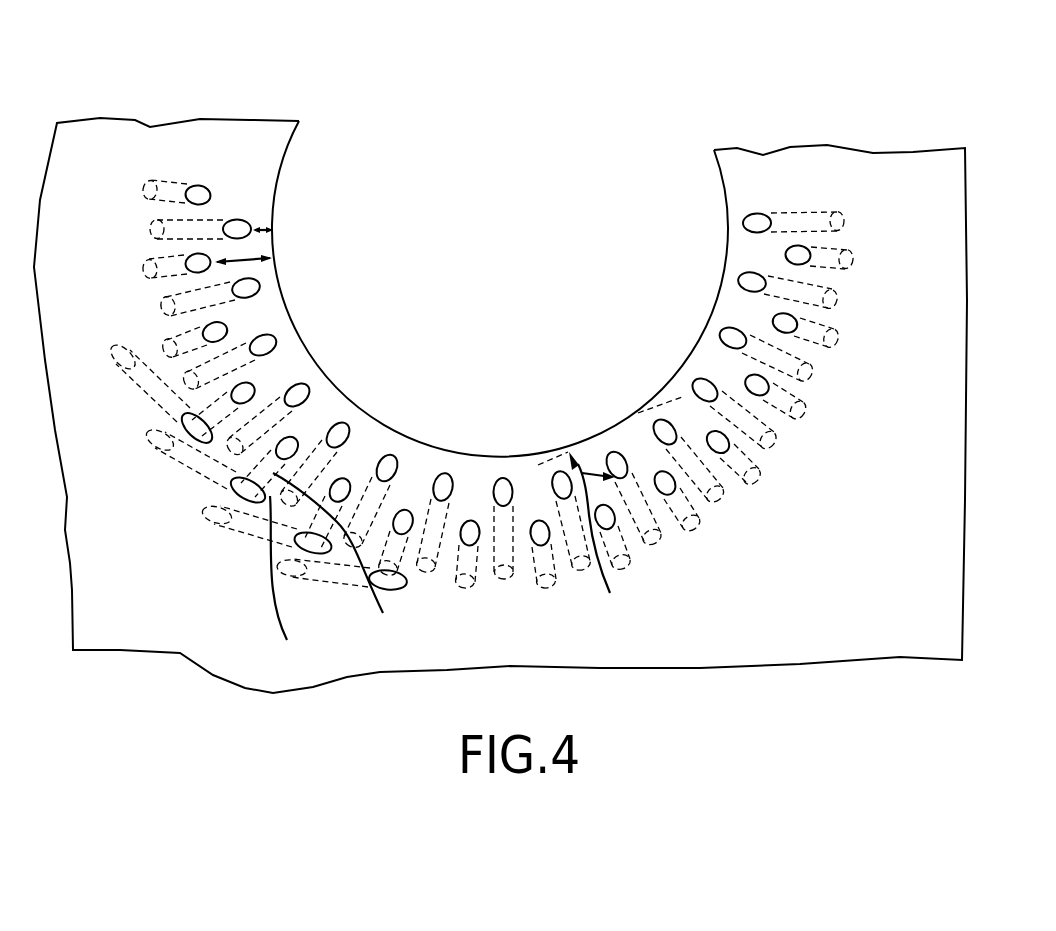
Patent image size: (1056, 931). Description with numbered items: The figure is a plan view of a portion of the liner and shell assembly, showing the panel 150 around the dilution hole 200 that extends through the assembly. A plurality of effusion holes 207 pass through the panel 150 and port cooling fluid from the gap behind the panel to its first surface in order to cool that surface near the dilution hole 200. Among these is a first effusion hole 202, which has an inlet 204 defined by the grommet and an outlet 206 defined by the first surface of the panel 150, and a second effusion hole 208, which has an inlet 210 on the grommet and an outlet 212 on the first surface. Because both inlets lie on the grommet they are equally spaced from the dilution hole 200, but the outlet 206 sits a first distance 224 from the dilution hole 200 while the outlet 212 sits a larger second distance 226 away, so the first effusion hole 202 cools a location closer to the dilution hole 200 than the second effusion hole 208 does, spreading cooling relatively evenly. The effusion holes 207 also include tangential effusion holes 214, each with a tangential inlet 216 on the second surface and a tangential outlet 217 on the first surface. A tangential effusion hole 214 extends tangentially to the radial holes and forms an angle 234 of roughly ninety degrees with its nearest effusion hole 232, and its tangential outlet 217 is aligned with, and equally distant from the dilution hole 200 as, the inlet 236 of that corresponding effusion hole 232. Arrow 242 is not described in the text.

The panel 150 is at (930, 212).
The dilution hole 200 is at (672, 195).
The first effusion hole 202 is at (213, 228).
The inlet 204 is at (153, 228).
The outlet 206 is at (174, 155).
The plurality of effusion holes 207 is at (754, 488).
The second effusion hole 208 is at (172, 263).
The inlet 210 is at (148, 268).
The outlet 212 is at (195, 266).
The tangential effusion hole 214 is at (210, 477).
The tangential inlet 216 is at (166, 436).
The tangential outlet 217 is at (243, 492).
The first distance 224 is at (270, 228).
The second distance 226 is at (246, 254).
The effusion hole 232 is at (341, 563).
The angle 234 is at (257, 465).
The inlet 236 is at (286, 587).
The flow direction 242 is at (610, 517).